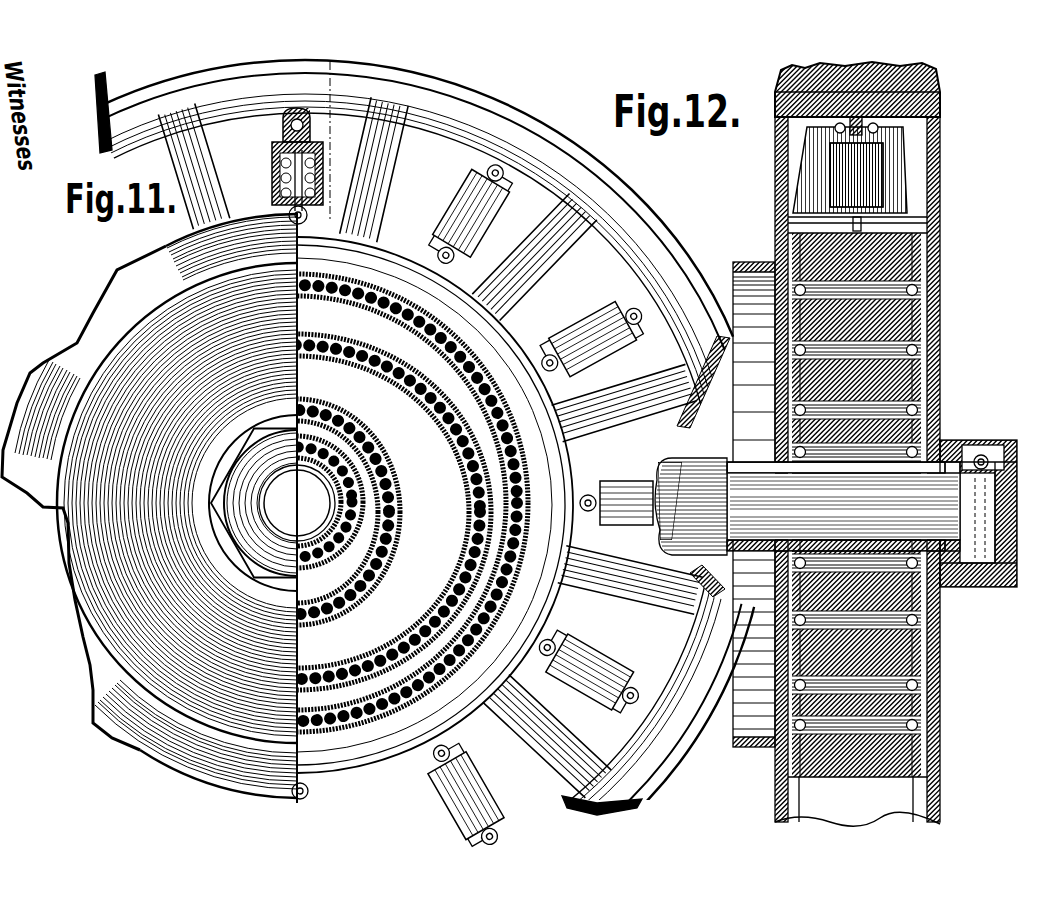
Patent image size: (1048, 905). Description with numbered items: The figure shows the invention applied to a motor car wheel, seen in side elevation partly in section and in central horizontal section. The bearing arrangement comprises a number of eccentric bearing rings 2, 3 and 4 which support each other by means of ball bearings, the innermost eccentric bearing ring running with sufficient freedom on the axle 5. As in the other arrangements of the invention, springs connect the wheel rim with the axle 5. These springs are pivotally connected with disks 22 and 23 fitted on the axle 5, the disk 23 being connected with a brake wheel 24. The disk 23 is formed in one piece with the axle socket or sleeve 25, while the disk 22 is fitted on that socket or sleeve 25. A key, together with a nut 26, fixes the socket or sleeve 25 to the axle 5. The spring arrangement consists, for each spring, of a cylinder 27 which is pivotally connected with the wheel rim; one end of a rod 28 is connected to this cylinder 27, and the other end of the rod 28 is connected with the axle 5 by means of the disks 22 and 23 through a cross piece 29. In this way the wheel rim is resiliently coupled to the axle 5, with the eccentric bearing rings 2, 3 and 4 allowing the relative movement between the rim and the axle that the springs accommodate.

In FIG. 11, the eccentric bearing ring 2 is at (279, 605).
In FIG. 11, the eccentric bearing ring 3 is at (297, 549).
In FIG. 11, the eccentric bearing ring 4 is at (297, 486).
In FIG. 11, the axle 5 is at (223, 628).
In FIG. 12, the axle 5 is at (893, 510).
In FIG. 12, the disk 22 is at (930, 375).
In FIG. 12, the disk 23 is at (775, 243).
In FIG. 12, the brake wheel 24 is at (740, 272).
In FIG. 12, the axle socket or sleeve 25 is at (917, 557).
In FIG. 12, the nut 26 is at (978, 452).
In FIG. 11, the cylinder 27 is at (271, 166).
In FIG. 11, the rod 28 is at (281, 173).
In FIG. 12, the cross piece 29 is at (940, 238).